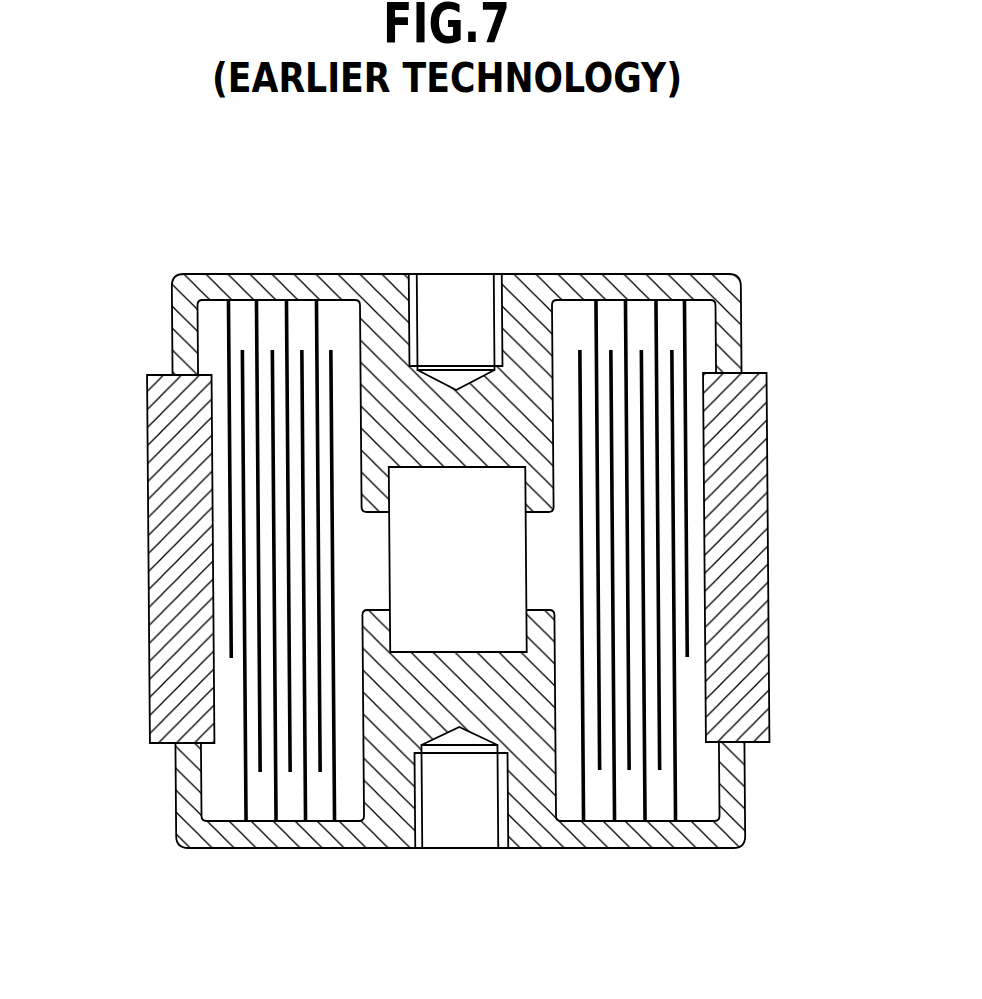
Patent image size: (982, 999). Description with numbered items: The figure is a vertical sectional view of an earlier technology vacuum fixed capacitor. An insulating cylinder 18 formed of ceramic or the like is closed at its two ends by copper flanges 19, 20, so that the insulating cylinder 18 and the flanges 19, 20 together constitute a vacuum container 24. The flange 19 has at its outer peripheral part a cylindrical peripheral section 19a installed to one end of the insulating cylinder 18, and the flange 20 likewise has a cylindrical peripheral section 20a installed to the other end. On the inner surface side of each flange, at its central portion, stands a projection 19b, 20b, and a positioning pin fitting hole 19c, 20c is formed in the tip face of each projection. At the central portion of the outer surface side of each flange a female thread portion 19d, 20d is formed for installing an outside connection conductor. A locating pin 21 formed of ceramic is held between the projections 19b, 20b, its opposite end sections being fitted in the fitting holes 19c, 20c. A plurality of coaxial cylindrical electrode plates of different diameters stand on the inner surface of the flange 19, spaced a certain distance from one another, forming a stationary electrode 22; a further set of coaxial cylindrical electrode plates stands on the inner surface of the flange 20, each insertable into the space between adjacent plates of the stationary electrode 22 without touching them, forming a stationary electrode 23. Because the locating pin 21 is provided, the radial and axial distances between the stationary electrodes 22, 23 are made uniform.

The insulating cylinder 18 is at (768, 543).
The flange 19 is at (587, 282).
The cylindrical peripheral section 19a is at (742, 331).
The projection 19b is at (353, 372).
The positioning pin fitting hole 19c is at (500, 466).
The female thread portion 19d is at (438, 294).
The flange 20 is at (608, 850).
The cylindrical peripheral section 20a is at (747, 777).
The projection 20b is at (362, 758).
The positioning pin fitting hole 20c is at (508, 656).
The female thread portion 20d is at (442, 836).
The locating pin 21 is at (410, 576).
The stationary electrode 22 is at (684, 322).
The stationary electrode 23 is at (243, 800).
The vacuum container 24 is at (135, 489).